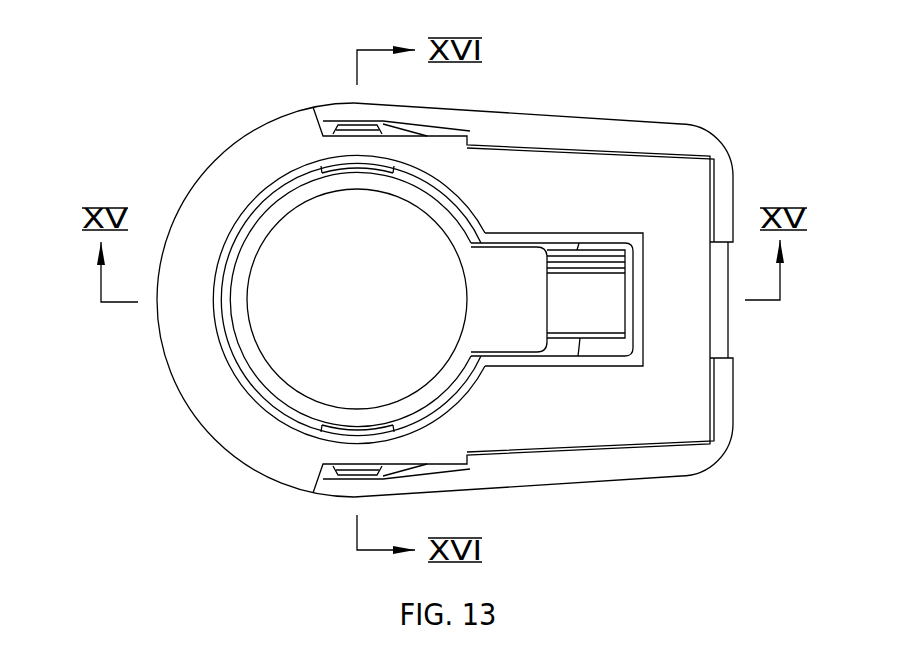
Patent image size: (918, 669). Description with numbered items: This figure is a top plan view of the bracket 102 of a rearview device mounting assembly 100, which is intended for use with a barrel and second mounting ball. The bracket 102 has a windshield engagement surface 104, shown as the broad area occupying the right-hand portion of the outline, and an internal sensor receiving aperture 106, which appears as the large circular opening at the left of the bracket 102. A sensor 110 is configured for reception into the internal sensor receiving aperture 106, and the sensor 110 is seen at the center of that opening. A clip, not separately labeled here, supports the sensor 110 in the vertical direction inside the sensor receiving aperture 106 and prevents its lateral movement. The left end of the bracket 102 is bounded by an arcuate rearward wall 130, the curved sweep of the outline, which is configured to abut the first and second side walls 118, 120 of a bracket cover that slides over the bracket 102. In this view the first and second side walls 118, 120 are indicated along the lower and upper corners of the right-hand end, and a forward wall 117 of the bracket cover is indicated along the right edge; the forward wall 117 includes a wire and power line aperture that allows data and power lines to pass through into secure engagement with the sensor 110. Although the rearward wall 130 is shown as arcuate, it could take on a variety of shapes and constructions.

The rearview device mounting assembly 100 is at (627, 88).
The bracket 102 is at (530, 192).
The windshield engagement surface 104 is at (644, 204).
The internal sensor receiving aperture 106 is at (287, 190).
The sensor 110 is at (346, 311).
The forward wall 117 is at (722, 208).
The first side wall 118 is at (675, 463).
The second side wall 120 is at (675, 137).
The arcuate rearward wall 130 is at (207, 399).